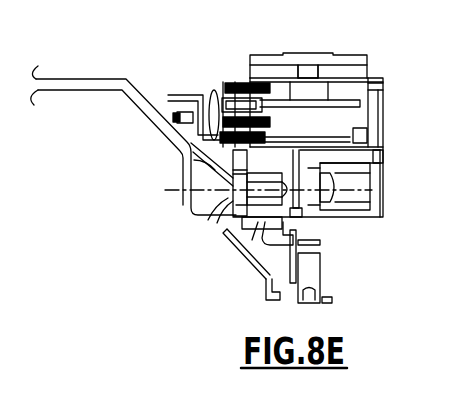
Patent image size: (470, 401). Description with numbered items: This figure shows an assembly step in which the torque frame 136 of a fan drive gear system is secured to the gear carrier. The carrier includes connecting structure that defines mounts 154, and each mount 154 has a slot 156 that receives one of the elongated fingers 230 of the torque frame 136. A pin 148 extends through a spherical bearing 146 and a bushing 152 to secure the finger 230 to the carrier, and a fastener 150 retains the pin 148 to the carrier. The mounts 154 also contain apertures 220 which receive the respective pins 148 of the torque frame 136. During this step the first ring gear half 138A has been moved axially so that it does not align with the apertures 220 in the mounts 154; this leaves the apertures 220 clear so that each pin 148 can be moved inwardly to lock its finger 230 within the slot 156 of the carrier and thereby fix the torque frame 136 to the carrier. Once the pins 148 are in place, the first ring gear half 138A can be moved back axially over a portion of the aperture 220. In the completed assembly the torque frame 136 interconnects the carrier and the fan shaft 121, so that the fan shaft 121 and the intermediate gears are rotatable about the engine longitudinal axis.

The fan shaft 121 is at (79, 78).
The elongated finger 230 is at (262, 181).
The torque frame 136 is at (192, 202).
The slot 156 is at (218, 218).
The first ring gear half 138A is at (253, 277).
The fastener 150 is at (338, 147).
The bushing 152 is at (317, 167).
The mount 154 is at (362, 172).
The spherical bearing 146 is at (330, 185).
The aperture 220 is at (315, 212).
The pin 148 is at (308, 270).